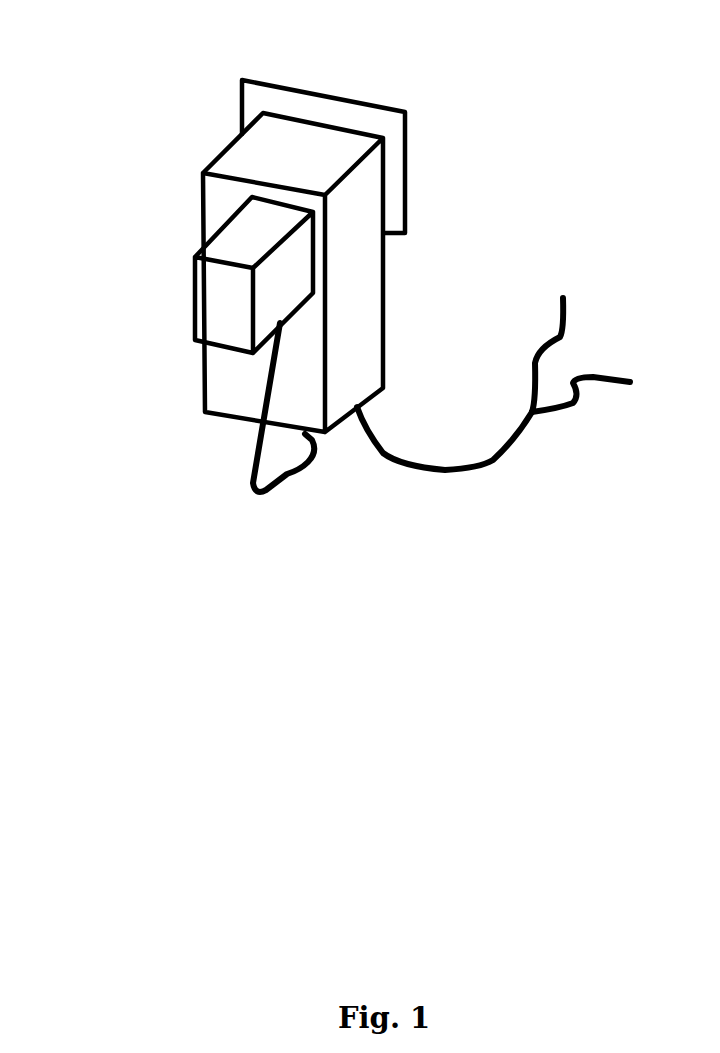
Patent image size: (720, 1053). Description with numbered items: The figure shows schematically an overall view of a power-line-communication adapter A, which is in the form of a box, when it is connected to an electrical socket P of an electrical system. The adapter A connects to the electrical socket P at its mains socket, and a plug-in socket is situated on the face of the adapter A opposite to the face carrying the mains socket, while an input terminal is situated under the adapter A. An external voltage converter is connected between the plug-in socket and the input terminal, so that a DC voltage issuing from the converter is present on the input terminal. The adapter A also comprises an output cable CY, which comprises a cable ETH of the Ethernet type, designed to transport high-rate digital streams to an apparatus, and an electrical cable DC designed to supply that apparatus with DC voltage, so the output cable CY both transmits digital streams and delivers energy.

The electrical socket P is at (405, 96).
The power-line-communication adapter A is at (275, 159).
The output cable CY is at (512, 471).
The Ethernet cable ETH is at (578, 302).
The electrical cable DC is at (611, 392).